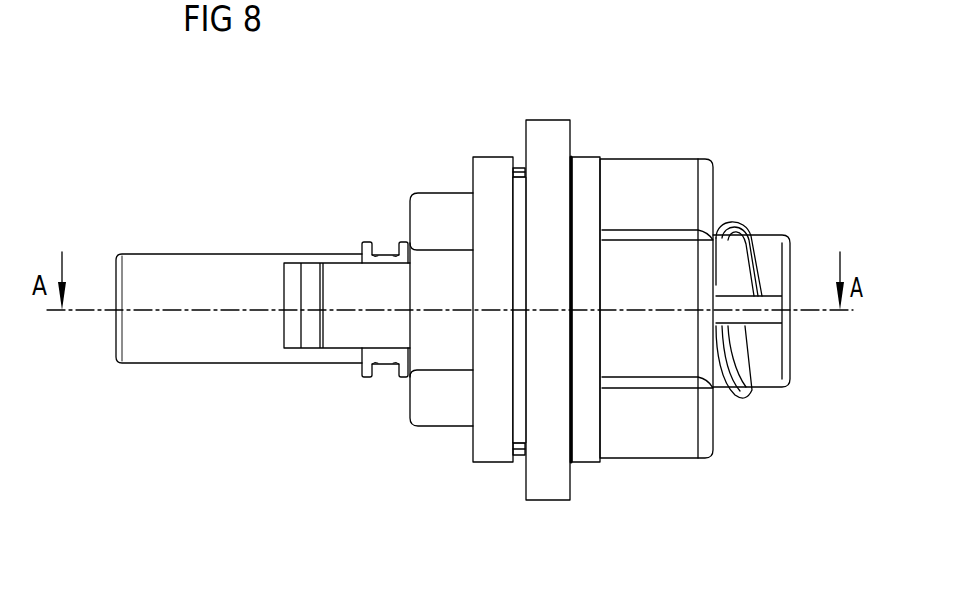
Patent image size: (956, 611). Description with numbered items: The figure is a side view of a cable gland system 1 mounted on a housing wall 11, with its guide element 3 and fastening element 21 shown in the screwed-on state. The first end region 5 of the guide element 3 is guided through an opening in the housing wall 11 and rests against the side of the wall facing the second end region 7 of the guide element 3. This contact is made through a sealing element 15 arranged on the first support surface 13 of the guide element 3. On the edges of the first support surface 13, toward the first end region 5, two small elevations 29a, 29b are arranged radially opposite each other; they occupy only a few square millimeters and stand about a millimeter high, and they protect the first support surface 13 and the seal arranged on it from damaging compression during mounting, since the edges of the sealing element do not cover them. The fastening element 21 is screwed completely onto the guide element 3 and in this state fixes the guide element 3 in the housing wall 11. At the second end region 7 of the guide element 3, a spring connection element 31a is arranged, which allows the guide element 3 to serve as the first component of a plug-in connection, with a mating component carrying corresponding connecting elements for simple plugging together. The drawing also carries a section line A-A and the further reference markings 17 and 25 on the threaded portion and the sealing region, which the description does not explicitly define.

The cable gland system 1 is at (776, 170).
The guide element 3 is at (763, 410).
The first end region 5 is at (802, 369).
The second end region 7 is at (215, 265).
The housing wall 11 is at (555, 160).
The first support surface 13 is at (516, 413).
The sealing element 15 is at (520, 195).
The thread 17 is at (747, 247).
The fastening element 21 is at (678, 180).
The seal 25 is at (572, 177).
The elevation 29a is at (518, 455).
The elevation 29b is at (517, 172).
The spring connection element 31a is at (347, 340).